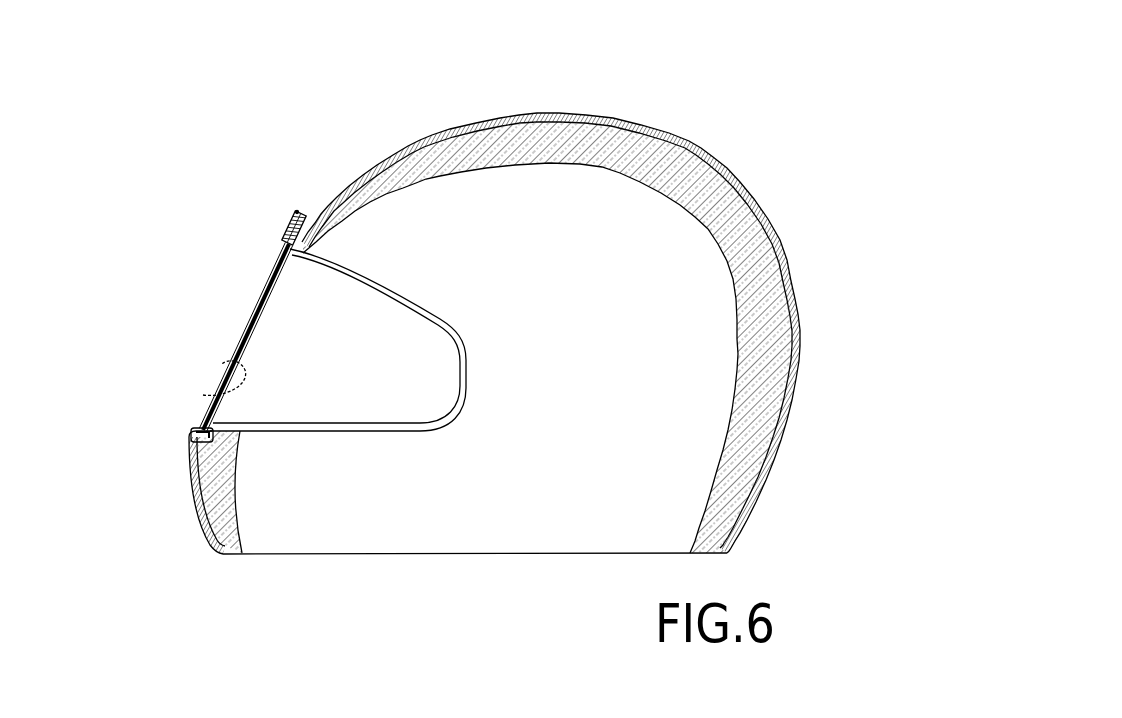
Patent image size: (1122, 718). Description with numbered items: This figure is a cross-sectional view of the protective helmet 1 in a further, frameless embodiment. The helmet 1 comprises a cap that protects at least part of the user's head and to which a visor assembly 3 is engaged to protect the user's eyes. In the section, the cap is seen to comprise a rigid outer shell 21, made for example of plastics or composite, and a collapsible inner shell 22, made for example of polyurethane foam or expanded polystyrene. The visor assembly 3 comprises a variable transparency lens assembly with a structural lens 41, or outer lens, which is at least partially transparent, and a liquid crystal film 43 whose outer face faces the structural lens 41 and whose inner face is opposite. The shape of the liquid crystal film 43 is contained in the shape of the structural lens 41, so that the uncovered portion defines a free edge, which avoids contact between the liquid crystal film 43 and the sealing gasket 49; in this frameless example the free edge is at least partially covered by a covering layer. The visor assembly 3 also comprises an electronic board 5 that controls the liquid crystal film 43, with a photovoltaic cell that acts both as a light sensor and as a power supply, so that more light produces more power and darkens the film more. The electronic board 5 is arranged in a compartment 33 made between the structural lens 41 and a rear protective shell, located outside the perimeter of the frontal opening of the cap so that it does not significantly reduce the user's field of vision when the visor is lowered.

The protective helmet 1 is at (145, 122).
The rigid outer shell 21 is at (686, 137).
The collapsible inner shell 22 is at (748, 247).
The visor assembly 3 is at (199, 349).
The structural lens 41 is at (250, 305).
The liquid crystal film 43 is at (203, 395).
The sealing gasket 49 is at (187, 461).
The electronic board 5 is at (285, 225).
The compartment 33 is at (297, 210).